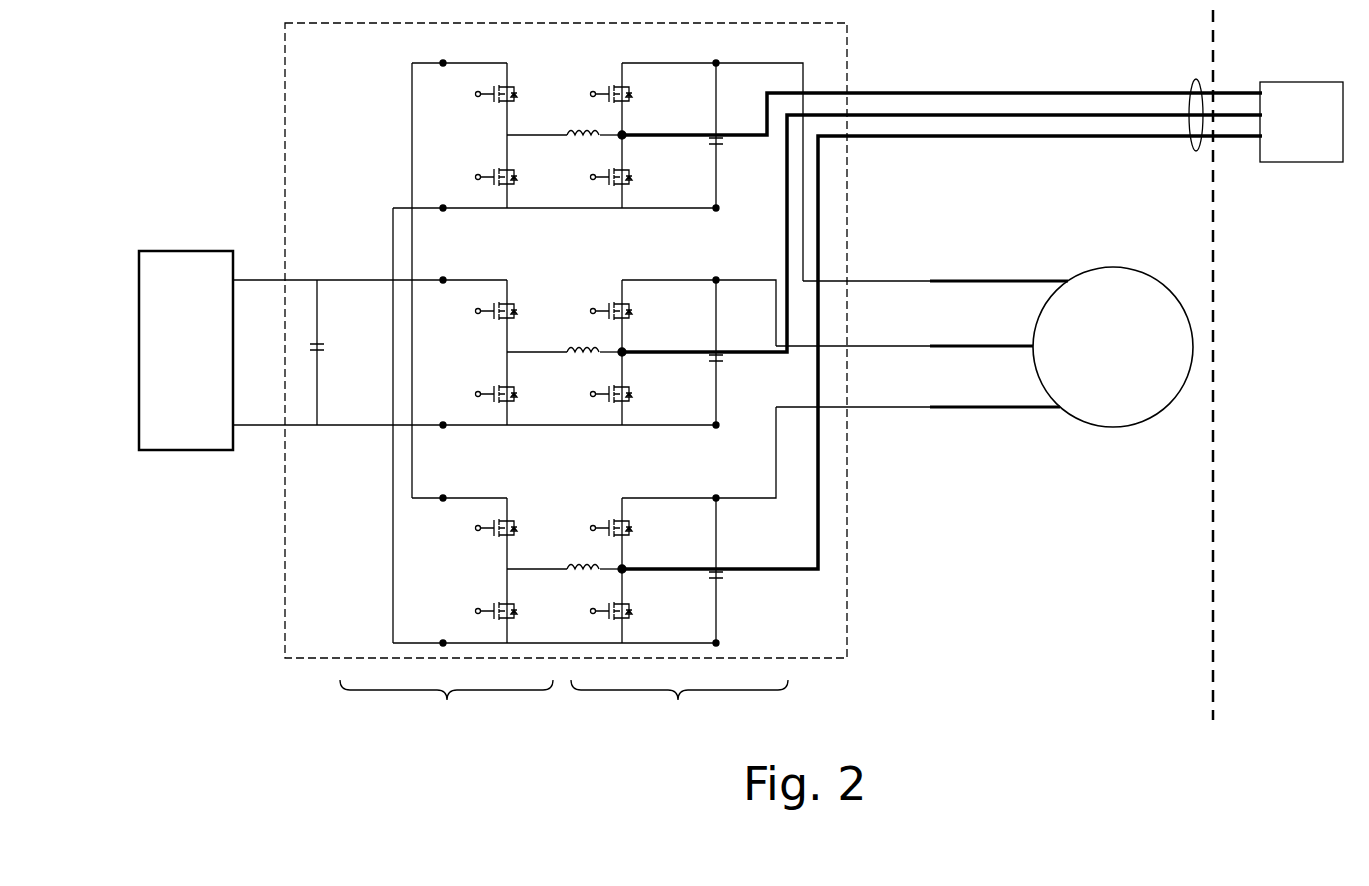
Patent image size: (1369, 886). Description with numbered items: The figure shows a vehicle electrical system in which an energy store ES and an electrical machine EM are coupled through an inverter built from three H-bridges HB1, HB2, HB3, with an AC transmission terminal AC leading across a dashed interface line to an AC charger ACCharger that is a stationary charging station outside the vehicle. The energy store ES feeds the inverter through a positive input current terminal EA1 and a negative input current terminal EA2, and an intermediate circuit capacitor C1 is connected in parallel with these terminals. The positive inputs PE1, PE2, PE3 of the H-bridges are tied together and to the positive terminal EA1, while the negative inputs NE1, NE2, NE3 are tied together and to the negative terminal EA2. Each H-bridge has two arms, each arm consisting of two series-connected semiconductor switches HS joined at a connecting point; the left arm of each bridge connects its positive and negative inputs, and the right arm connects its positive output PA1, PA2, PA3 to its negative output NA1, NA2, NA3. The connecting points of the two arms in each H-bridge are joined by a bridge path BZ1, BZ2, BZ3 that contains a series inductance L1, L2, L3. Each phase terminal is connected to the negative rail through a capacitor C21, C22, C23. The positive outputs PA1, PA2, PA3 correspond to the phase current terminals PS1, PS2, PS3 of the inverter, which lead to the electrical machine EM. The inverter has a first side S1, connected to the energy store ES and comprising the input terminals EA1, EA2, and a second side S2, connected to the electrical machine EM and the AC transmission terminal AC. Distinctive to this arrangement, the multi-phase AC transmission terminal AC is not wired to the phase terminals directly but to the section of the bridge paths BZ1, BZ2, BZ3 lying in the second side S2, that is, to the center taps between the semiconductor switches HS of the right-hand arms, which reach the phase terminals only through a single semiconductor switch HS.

The energy store ES is at (186, 350).
The positive input current terminal EA1 is at (281, 280).
The negative input current terminal EA2 is at (281, 428).
The intermediate circuit capacitor C1 is at (335, 352).
The positive input PE1 is at (459, 52).
The positive input PE2 is at (446, 269).
The positive input PE3 is at (459, 487).
The negative input NE1 is at (554, 197).
The negative input NE2 is at (554, 414).
The negative input NE3 is at (554, 632).
The semiconductor switch HS is at (510, 166).
The H-bridge HB1 is at (589, 81).
The H-bridge HB2 is at (589, 298).
The H-bridge HB3 is at (589, 516).
The bridge path BZ1 is at (564, 132).
The bridge path BZ2 is at (564, 349).
The bridge path BZ3 is at (564, 566).
The inductance L1 is at (552, 124).
The inductance L2 is at (552, 341).
The inductance L3 is at (552, 558).
The positive output PA1 is at (712, 159).
The positive output PA2 is at (699, 300).
The positive output PA3 is at (699, 454).
The negative output NA1 is at (715, 197).
The negative output NA2 is at (715, 414).
The negative output NA3 is at (715, 632).
The capacitor C21 is at (718, 150).
The capacitor C22 is at (718, 367).
The capacitor C23 is at (718, 584).
The phase current terminal PS1 is at (837, 281).
The phase current terminal PS2 is at (837, 345).
The phase current terminal PS3 is at (837, 407).
The electrical machine EM is at (1113, 347).
The AC transmission terminal AC is at (1192, 146).
The AC charger ACCharger is at (1301, 122).
The first side S1 is at (446, 709).
The second side S2 is at (679, 709).